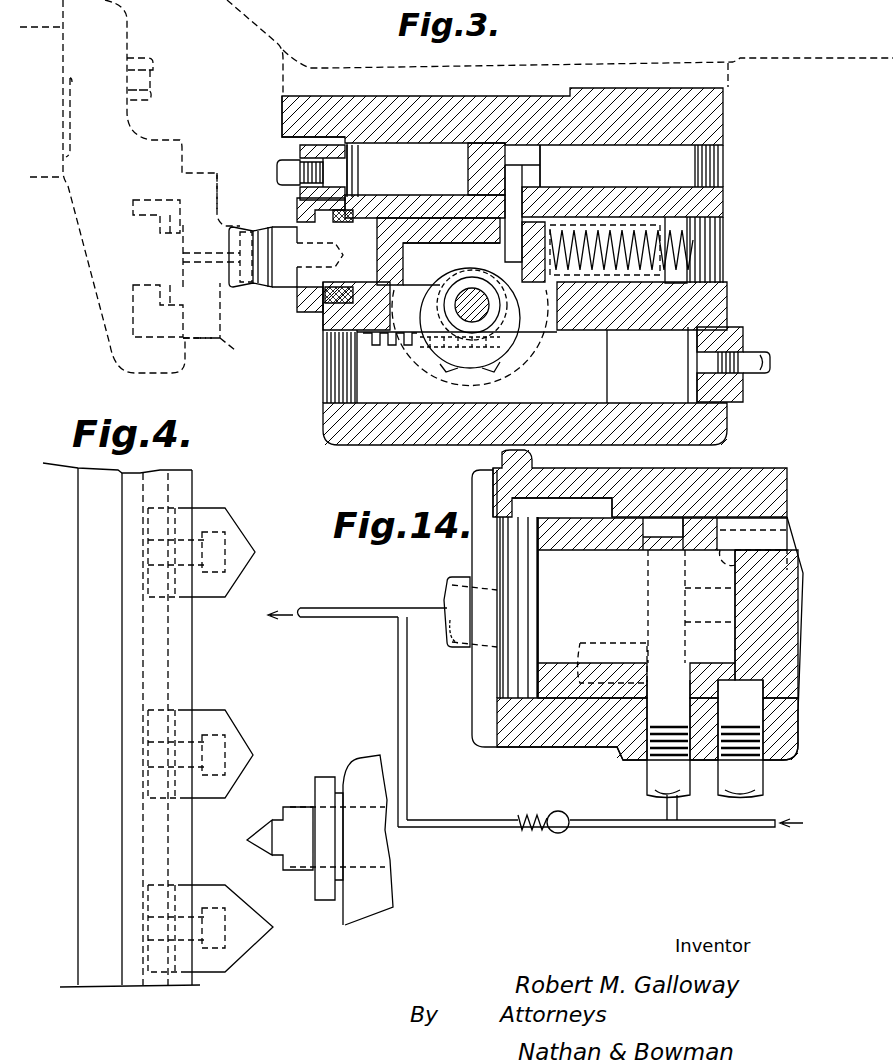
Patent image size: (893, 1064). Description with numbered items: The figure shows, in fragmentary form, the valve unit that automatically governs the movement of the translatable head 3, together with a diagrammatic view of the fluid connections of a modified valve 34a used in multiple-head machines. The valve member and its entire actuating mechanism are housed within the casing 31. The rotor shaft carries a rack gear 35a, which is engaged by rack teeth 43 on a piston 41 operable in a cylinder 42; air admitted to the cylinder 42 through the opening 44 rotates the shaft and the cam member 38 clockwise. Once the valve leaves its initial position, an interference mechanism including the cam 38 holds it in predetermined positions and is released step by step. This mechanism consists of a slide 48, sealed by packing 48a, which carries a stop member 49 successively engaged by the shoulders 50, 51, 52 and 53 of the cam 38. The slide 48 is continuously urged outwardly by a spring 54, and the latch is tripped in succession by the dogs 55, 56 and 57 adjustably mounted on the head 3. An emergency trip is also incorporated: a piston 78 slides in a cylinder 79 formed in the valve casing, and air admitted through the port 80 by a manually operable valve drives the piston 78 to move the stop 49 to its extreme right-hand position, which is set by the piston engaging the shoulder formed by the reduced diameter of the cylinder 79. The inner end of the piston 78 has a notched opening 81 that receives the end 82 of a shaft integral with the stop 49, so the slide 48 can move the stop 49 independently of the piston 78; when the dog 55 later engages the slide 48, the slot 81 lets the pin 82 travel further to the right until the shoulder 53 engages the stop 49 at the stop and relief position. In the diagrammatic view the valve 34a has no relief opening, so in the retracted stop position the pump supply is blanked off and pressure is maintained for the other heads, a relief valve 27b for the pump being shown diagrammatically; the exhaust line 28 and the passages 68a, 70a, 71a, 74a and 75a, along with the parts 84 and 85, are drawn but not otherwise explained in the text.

In FIG. 4, the translatable head 3 is at (121, 725).
In FIG. 14, the relief valve 27b is at (543, 817).
In FIG. 14, the exhaust line connection 28 is at (412, 607).
In FIG. 3, the casing 31 is at (716, 292).
In FIG. 4, the casing 31 is at (383, 887).
In FIG. 14, the valve 34a is at (580, 515).
In FIG. 3, the rack gear 35a is at (452, 315).
In FIG. 3, the cam member 38 is at (480, 357).
In FIG. 3, the piston 41 is at (482, 366).
In FIG. 3, the cylinder 42 is at (663, 365).
In FIG. 3, the rack teeth 43 is at (388, 342).
In FIG. 3, the opening 44 is at (713, 358).
In FIG. 3, the slide 48 is at (290, 282).
In FIG. 4, the slide 48 is at (268, 840).
In FIG. 3, the packing 48a is at (340, 223).
In FIG. 3, the stop member 49 is at (447, 262).
In FIG. 3, the shoulder 50 is at (513, 295).
In FIG. 3, the shoulder 51 is at (520, 315).
In FIG. 3, the shoulder 52 is at (503, 348).
In FIG. 3, the shoulder 53 is at (440, 383).
In FIG. 3, the spring 54 is at (673, 243).
In FIG. 3, the dog 55 is at (235, 350).
In FIG. 4, the dog 55 is at (262, 928).
In FIG. 3, the dog 56 is at (217, 222).
In FIG. 4, the dog 56 is at (253, 755).
In FIG. 3, the dog 57 is at (199, 354).
In FIG. 4, the dog 57 is at (255, 555).
In FIG. 14, the piston chamber 68a is at (636, 608).
In FIG. 14, the port 70a is at (719, 622).
In FIG. 14, the cylinder cap 71a is at (788, 488).
In FIG. 14, the passage 74a is at (725, 560).
In FIG. 14, the pipe connection 75a is at (763, 693).
In FIG. 3, the piston 78 is at (376, 169).
In FIG. 3, the cylinder 79 is at (451, 138).
In FIG. 3, the port 80 is at (343, 165).
In FIG. 3, the notched opening 81 is at (540, 177).
In FIG. 3, the end of shaft 82 is at (516, 178).
In FIG. 3, the screw 84 is at (762, 357).
In FIG. 3, the threaded rod 85 is at (279, 171).